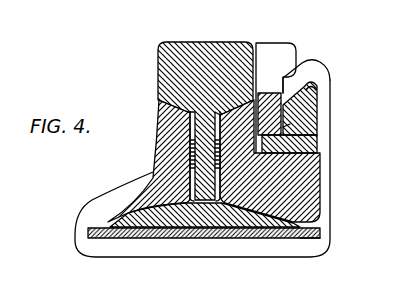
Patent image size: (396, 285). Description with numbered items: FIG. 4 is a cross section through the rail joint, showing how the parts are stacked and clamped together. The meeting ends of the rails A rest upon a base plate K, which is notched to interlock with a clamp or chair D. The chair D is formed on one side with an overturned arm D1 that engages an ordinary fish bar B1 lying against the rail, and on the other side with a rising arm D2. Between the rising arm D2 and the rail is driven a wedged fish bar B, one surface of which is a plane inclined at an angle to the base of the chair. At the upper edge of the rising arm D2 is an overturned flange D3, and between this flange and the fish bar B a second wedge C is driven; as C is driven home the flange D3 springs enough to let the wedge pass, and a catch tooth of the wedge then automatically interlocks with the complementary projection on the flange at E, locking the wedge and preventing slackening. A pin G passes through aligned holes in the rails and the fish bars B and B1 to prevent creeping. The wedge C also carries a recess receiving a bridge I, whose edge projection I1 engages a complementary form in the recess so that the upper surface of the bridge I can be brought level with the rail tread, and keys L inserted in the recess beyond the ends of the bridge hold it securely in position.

The meeting ends of the rails A is at (205, 121).
The wedged fish bar B is at (270, 161).
The fish bar B1 is at (149, 161).
The second wedge C is at (300, 110).
The clamp or chair D is at (204, 241).
The overturned arm D1 is at (122, 193).
The rising arm D2 is at (323, 153).
The overturned flange D3 is at (300, 73).
The interlock point E is at (272, 95).
The pin G is at (150, 161).
The bridge I is at (276, 98).
The projection I1 is at (263, 120).
The base plate K is at (297, 238).
The keys L is at (282, 127).